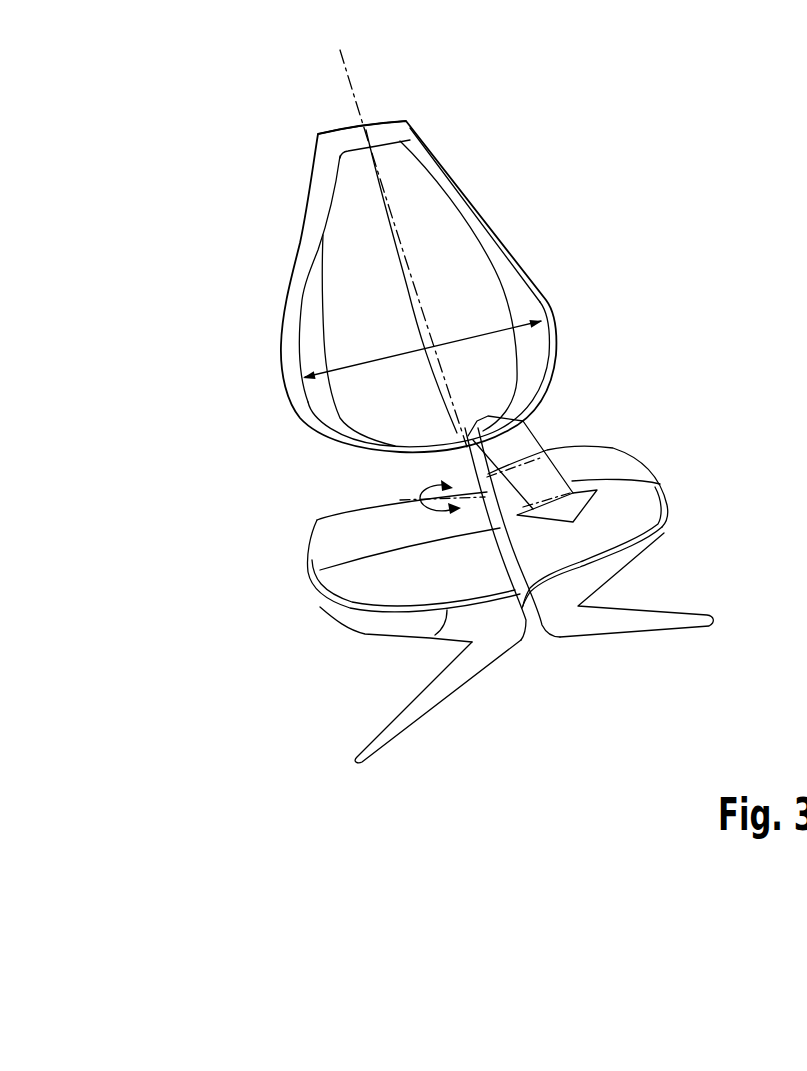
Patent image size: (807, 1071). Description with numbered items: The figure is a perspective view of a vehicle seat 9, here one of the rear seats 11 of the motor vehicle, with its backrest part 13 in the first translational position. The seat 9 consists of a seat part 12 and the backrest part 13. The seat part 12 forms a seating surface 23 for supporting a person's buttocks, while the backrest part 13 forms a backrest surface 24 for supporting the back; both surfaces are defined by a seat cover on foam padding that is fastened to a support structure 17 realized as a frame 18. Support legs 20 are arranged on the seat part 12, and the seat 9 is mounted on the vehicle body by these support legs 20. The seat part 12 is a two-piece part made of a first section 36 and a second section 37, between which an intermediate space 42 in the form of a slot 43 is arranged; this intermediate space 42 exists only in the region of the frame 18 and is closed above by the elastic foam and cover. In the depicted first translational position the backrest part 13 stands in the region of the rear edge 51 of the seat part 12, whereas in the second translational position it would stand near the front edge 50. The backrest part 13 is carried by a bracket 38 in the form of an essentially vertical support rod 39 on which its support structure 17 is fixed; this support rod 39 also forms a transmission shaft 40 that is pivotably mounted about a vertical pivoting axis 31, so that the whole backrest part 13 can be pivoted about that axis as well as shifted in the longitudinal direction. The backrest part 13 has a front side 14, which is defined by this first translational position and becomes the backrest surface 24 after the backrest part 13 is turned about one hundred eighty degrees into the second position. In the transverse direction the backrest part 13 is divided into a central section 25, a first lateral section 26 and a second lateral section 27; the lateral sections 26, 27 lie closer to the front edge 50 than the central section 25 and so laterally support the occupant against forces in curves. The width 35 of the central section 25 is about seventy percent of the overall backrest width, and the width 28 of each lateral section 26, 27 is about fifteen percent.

The seat 9 is at (468, 442).
The rear seat 11 is at (468, 442).
The seat part 12 is at (288, 588).
The backrest part 13 is at (254, 340).
The front side 14 is at (411, 259).
The support structure 17 is at (468, 442).
The frame 18 is at (468, 442).
The support legs 20 is at (496, 657).
The seating surface 23 is at (617, 452).
The backrest surface 24 is at (390, 320).
The central section 25 is at (357, 177).
The first lateral section 26 is at (520, 300).
The second lateral section 27 is at (308, 316).
The width of lateral section 28 is at (312, 386).
The pivoting axis 31 is at (340, 54).
The width of central section 35 is at (399, 358).
The first section 36 is at (368, 626).
The second section 37 is at (631, 547).
The bracket 38 is at (344, 487).
The support rod 39 is at (344, 487).
The transmission shaft 40 is at (460, 475).
The intermediate space 42 is at (527, 571).
The slot 43 is at (534, 647).
The front edge 50 is at (371, 623).
The rear edge 51 is at (557, 447).